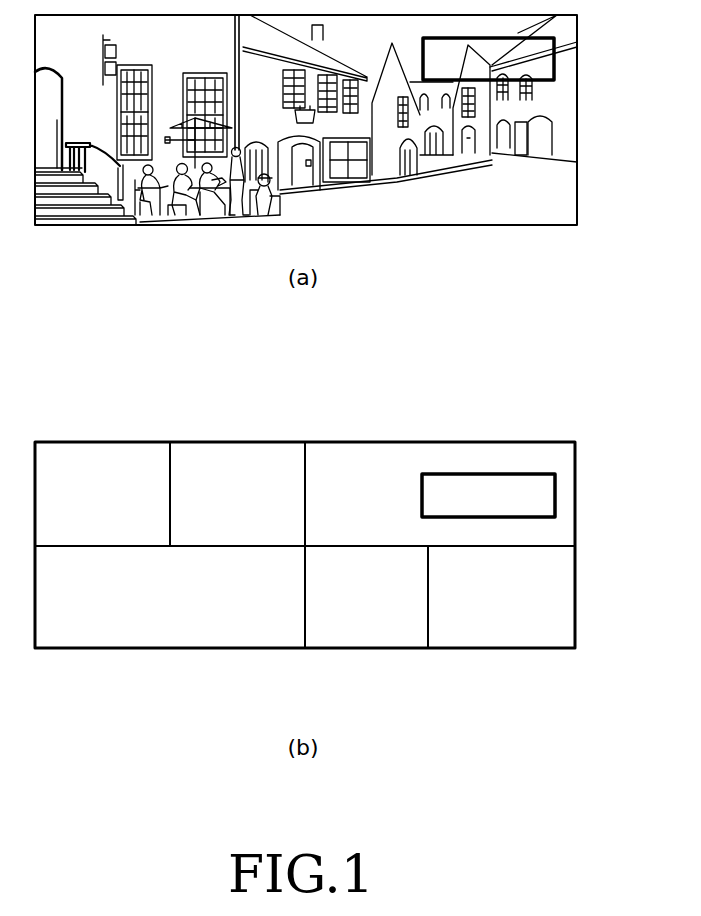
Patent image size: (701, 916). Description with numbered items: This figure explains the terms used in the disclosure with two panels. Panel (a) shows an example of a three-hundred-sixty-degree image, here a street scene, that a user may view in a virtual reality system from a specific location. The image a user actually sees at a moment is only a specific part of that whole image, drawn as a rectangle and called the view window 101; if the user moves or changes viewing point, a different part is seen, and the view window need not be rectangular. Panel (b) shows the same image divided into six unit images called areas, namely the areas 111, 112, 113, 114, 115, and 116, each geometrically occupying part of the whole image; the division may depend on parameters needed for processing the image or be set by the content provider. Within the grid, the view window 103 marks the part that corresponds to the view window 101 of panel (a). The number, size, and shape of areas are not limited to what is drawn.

The view window 101 is at (555, 60).
The view window 103 is at (556, 493).
The area 111 is at (170, 617).
The area 112 is at (102, 472).
The area 113 is at (235, 472).
The area 114 is at (371, 472).
The area 115 is at (365, 617).
The area 116 is at (503, 617).